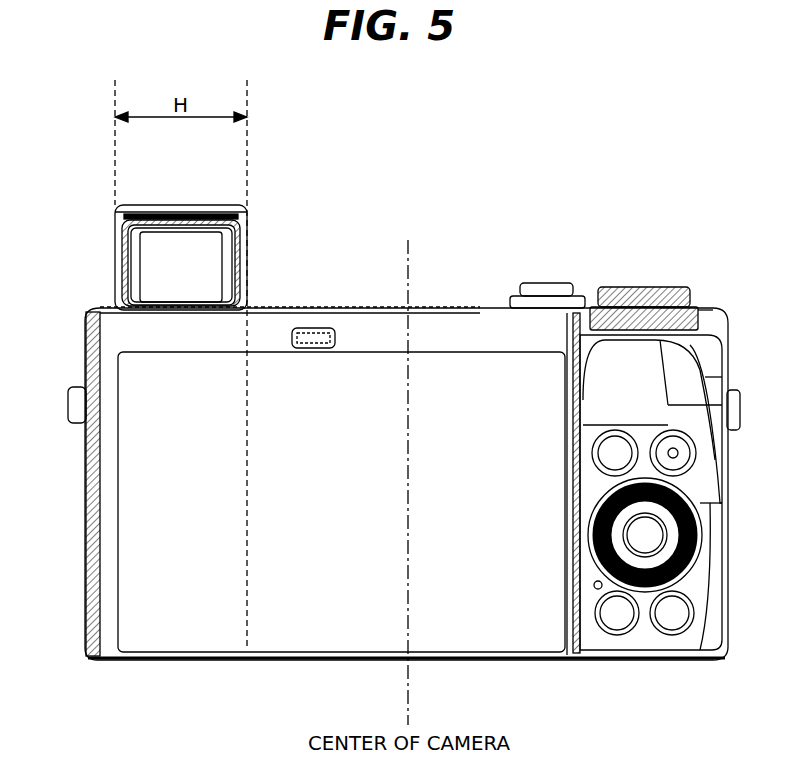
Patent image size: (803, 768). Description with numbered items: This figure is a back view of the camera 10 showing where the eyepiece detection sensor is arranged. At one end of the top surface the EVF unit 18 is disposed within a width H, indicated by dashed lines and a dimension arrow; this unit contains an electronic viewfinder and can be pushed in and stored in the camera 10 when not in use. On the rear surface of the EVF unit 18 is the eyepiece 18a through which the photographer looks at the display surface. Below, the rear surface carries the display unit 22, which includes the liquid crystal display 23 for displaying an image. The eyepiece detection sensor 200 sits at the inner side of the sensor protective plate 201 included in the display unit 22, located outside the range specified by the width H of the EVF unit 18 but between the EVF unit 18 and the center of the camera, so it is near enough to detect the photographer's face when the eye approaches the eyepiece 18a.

The camera 10 is at (672, 253).
The EVF unit 18 is at (143, 205).
The eyepiece 18a is at (203, 257).
The display unit 22 is at (95, 492).
The liquid crystal display 23 is at (313, 607).
The eyepiece detection sensor 200 is at (318, 330).
The sensor protective plate 201 is at (290, 338).